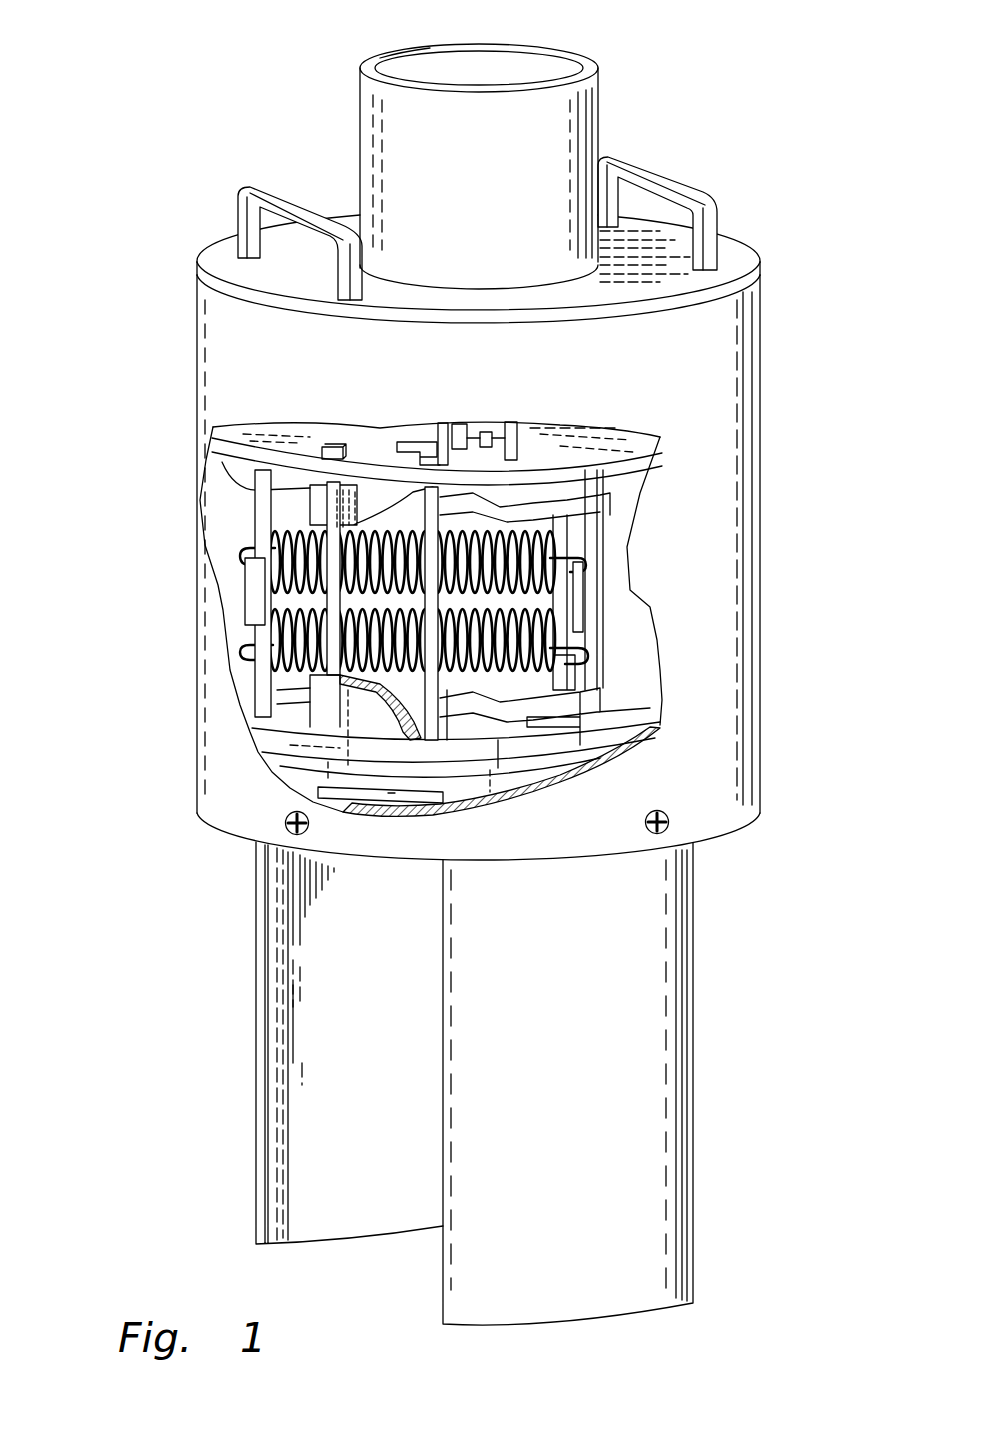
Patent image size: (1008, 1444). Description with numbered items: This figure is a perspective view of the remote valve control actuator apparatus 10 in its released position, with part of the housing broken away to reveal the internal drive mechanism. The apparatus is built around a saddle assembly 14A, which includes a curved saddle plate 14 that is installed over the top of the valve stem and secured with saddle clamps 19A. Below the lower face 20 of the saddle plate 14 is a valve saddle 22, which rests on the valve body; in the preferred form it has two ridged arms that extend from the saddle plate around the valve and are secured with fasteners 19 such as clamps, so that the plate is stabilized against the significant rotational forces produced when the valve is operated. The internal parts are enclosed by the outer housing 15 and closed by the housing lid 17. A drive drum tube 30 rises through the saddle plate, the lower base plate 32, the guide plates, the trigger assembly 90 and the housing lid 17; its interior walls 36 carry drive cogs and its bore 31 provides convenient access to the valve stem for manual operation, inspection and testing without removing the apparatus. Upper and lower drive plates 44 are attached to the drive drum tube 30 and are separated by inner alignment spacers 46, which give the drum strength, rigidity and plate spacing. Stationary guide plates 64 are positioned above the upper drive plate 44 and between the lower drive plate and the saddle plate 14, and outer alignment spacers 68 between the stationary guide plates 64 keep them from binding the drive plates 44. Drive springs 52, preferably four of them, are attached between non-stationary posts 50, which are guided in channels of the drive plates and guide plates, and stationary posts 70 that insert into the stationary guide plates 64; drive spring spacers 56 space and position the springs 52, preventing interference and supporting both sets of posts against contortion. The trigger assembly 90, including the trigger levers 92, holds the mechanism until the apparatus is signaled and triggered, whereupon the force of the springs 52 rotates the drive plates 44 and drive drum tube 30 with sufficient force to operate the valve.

The remote valve control actuator apparatus 10 is at (148, 212).
The saddle plate 14 is at (285, 775).
The saddle assembly 14A is at (756, 985).
The outer housing 15 is at (760, 338).
The housing lid 17 is at (733, 247).
The fasteners 19 is at (331, 444).
The saddle clamps 19A is at (390, 795).
The lower face 20 is at (300, 800).
The valve saddle 22 is at (270, 1068).
The drive drum tube 30 is at (590, 116).
The drive drum tube bore 31 is at (560, 75).
The lower base plate 32 is at (290, 740).
The interior walls 36 is at (410, 62).
The drive plates 44 is at (612, 506).
The inner alignment spacers 46 is at (592, 558).
The non-stationary posts 50 is at (565, 530).
The drive springs 52 is at (262, 540).
The drive spring spacers 56 is at (252, 596).
The stationary guide plates 64 is at (225, 458).
The outer alignment spacers 68 is at (356, 500).
The stationary posts 70 is at (262, 662).
The trigger assembly 90 is at (632, 446).
The trigger levers 92 is at (545, 440).